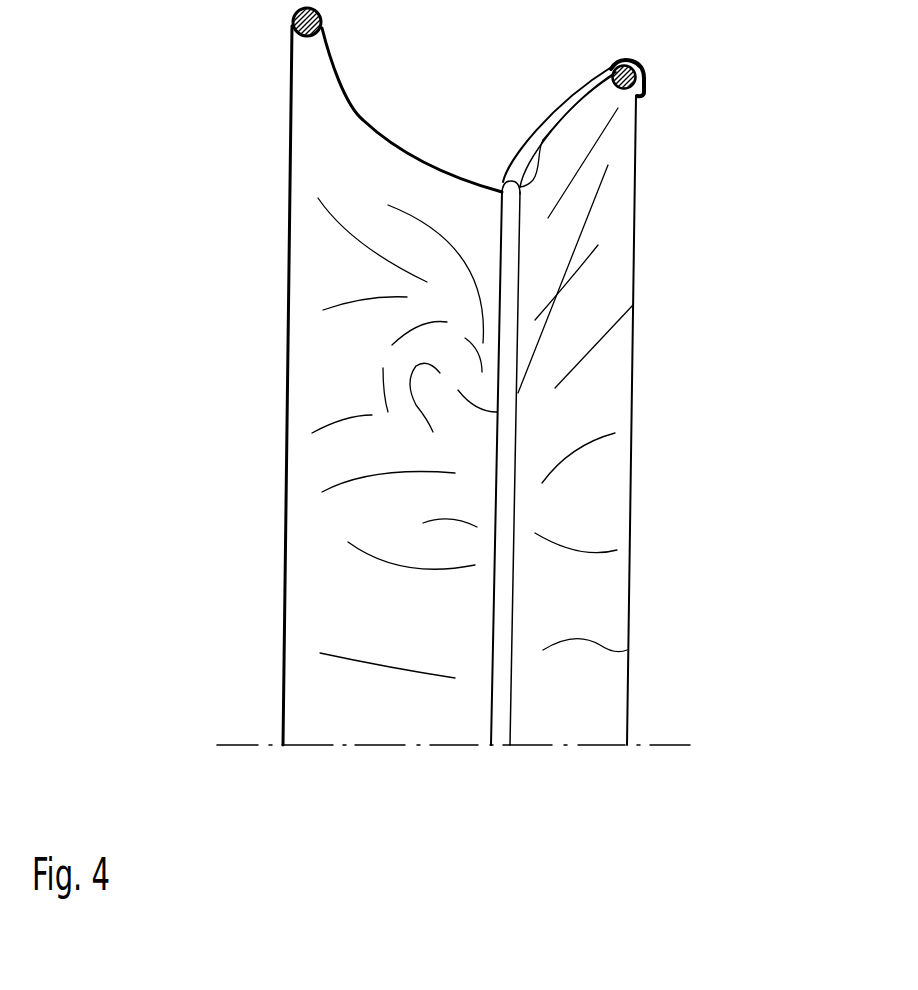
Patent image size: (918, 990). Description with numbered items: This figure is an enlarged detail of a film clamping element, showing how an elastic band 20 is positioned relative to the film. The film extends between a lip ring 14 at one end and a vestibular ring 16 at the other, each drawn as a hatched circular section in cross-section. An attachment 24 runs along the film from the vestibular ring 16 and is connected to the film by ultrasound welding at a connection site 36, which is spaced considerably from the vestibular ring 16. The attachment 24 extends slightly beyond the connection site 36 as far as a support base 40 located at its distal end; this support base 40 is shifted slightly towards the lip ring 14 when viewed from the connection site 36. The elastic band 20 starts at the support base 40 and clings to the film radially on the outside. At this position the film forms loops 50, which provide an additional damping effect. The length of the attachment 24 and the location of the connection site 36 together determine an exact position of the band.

The lip ring 14 is at (293, 25).
The vestibular ring 16 is at (644, 75).
The elastic band 20 is at (508, 297).
The attachment 24 is at (563, 103).
The connection site 36 is at (540, 146).
The support base 40 is at (506, 179).
The loops 50 is at (537, 368).